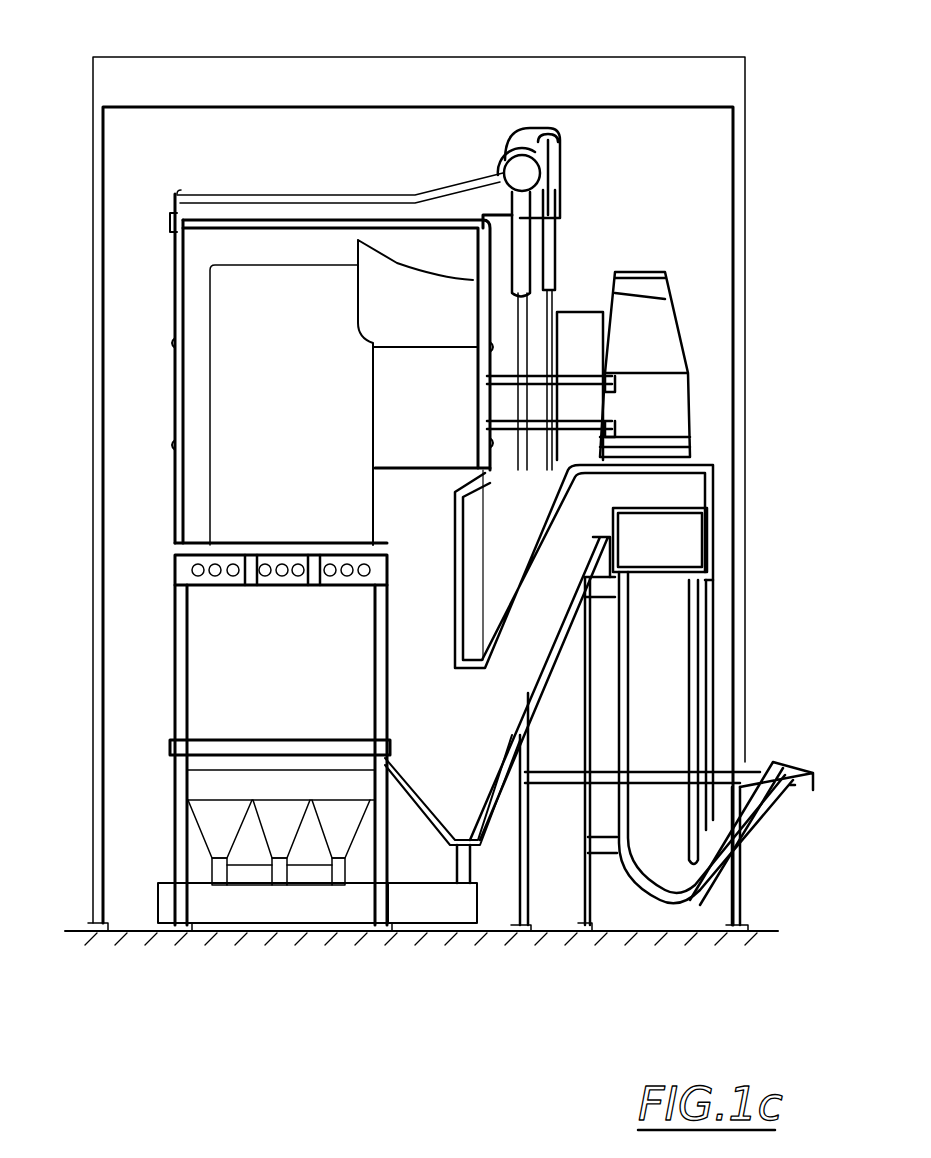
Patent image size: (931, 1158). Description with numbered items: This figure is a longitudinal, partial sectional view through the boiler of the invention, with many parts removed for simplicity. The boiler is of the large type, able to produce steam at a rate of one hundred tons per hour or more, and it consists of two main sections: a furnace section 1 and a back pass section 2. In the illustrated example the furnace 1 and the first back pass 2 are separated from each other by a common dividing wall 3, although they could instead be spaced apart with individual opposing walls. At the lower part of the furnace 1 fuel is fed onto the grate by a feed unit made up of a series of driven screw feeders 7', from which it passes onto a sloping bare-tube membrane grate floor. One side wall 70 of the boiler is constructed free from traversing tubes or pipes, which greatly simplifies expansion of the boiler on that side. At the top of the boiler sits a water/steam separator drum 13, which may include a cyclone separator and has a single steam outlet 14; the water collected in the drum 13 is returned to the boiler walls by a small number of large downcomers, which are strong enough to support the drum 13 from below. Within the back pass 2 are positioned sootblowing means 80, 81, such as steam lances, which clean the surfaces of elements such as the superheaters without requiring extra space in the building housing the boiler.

The furnace section 1 is at (270, 315).
The first back pass section 2 is at (412, 404).
The common dividing wall 3 is at (375, 362).
The boiler side wall 70 is at (175, 419).
The driven screw feeders 7' is at (211, 574).
The water/steam separator drum 13 is at (512, 160).
The steam outlet 14 is at (535, 135).
The sootblowing means 80 is at (625, 375).
The sootblowing means 81 is at (607, 430).